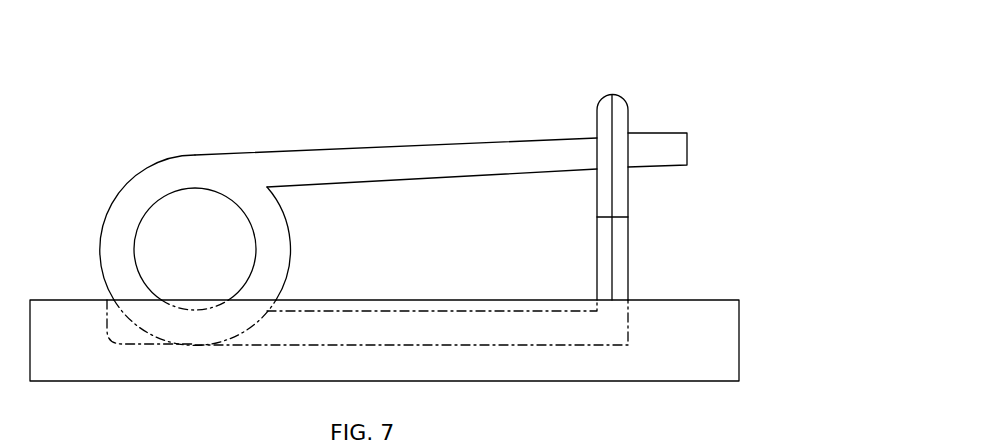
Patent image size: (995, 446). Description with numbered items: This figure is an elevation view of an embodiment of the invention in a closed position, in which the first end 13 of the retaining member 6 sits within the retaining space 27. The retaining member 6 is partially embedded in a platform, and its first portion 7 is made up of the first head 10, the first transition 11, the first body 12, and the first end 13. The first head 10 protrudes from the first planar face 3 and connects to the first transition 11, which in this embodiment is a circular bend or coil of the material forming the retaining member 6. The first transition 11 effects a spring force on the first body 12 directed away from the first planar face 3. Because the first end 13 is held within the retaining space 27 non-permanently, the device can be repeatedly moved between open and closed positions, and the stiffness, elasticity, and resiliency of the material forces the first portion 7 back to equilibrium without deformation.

The first planar face 3 is at (705, 300).
The retaining member 6 is at (426, 154).
The first portion 7 is at (426, 154).
The first head 10 is at (105, 298).
The first transition 11 is at (132, 196).
The first body 12 is at (462, 155).
The first end 13 is at (639, 146).
The retaining space 27 is at (627, 170).